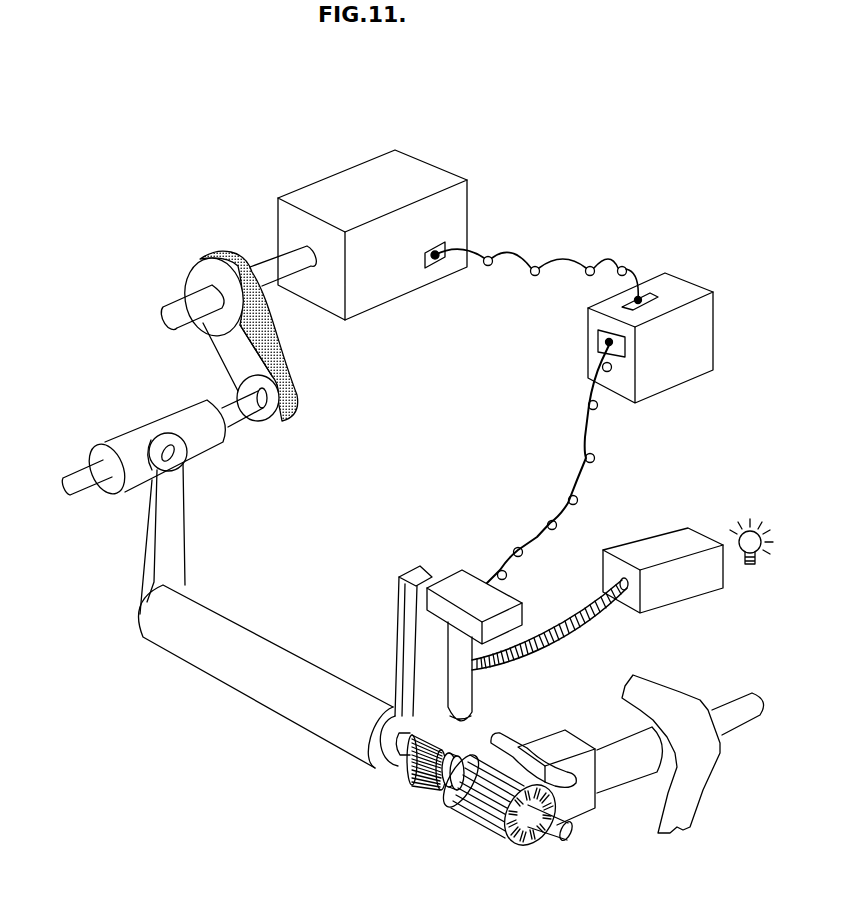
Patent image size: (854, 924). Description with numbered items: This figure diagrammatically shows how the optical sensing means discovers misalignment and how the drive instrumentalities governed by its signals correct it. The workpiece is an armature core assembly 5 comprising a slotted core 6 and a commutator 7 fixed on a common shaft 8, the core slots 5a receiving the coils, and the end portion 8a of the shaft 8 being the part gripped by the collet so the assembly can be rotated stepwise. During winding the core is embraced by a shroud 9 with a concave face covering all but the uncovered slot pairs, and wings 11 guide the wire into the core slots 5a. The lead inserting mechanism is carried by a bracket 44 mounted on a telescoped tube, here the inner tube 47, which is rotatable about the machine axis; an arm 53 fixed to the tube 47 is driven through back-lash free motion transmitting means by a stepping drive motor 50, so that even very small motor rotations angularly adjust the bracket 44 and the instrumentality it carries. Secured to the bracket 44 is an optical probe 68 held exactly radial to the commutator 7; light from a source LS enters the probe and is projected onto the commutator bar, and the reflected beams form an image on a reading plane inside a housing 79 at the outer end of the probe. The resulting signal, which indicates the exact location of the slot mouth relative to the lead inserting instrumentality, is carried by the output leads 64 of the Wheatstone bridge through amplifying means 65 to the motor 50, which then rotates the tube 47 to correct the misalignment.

The drive motor 50 is at (343, 185).
The arm 53 is at (170, 533).
The inner tube 47 is at (240, 672).
The bracket 44 is at (398, 636).
The housing 79 is at (497, 607).
The optical probe 68 is at (463, 688).
The light source LS is at (738, 525).
The amplifying means 65 is at (677, 368).
The output leads 64 is at (583, 438).
The end portion of the shaft 8a is at (400, 744).
The armature core assembly 5 is at (476, 806).
The commutator 7 is at (410, 775).
The slotted core 6 is at (493, 812).
The core slots 5a is at (467, 795).
The shaft 8 is at (547, 828).
The wings 11 is at (517, 753).
The shroud 9 is at (553, 743).